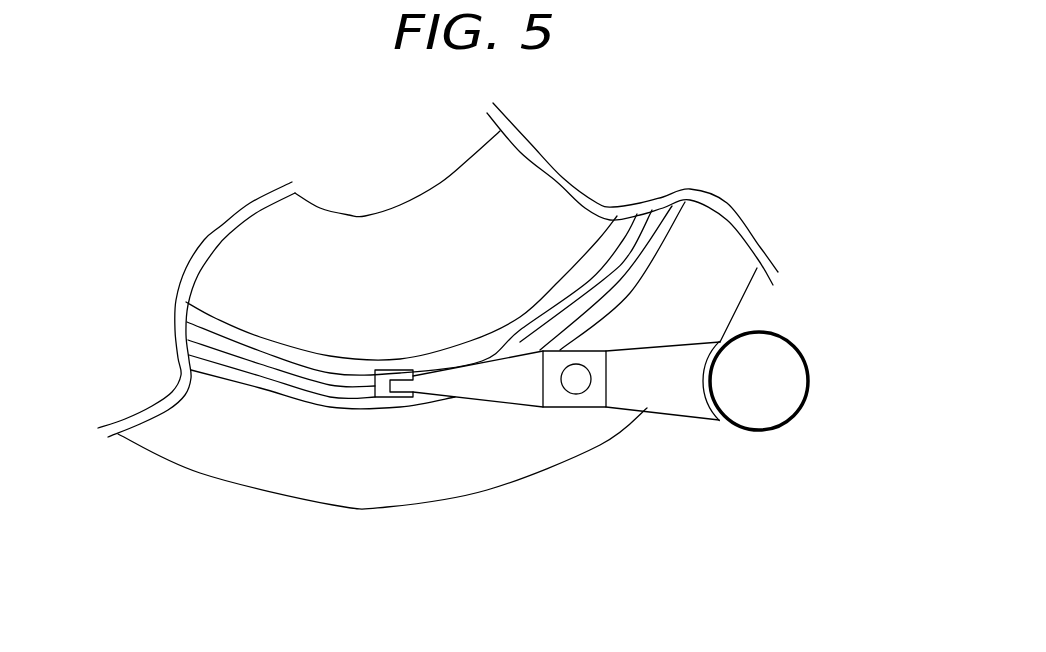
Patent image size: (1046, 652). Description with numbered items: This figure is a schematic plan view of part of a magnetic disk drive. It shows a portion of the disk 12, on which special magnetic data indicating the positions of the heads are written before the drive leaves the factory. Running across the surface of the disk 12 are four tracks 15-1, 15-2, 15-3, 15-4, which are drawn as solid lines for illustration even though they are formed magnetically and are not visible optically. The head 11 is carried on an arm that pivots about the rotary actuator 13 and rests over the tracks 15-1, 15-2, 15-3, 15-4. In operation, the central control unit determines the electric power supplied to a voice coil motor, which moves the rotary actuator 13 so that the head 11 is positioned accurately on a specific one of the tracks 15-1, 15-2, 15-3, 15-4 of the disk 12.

The head 11 is at (397, 394).
The disk 12 is at (337, 495).
The rotary actuator 13 is at (747, 412).
The track 15-1 is at (190, 306).
The track 15-2 is at (187, 325).
The track 15-3 is at (200, 353).
The track 15-4 is at (203, 370).